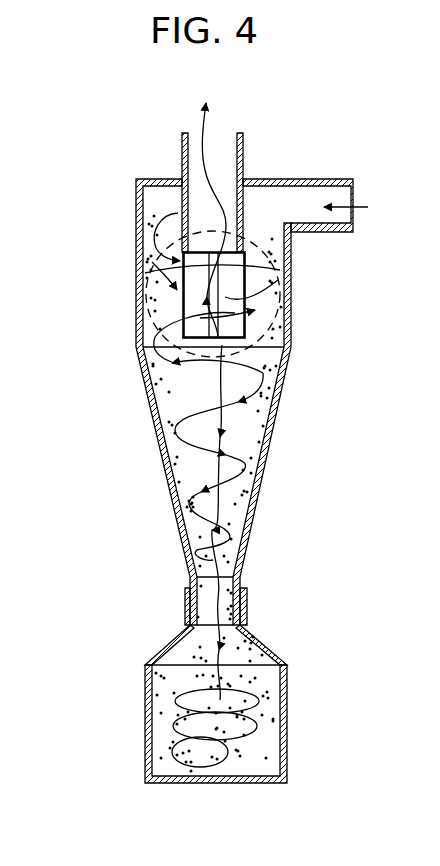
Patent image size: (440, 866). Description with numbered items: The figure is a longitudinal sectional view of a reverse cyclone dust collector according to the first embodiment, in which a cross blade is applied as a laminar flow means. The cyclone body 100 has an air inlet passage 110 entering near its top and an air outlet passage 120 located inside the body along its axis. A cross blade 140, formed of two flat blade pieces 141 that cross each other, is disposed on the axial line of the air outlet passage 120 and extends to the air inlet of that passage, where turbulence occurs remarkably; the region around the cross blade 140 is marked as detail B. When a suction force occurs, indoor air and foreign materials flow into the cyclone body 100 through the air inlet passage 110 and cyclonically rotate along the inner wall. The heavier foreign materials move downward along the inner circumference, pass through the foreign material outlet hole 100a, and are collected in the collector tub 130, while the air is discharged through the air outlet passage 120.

The cyclone body 100 is at (135, 312).
The foreign material outlet hole 100a is at (217, 601).
The air inlet passage 110 is at (308, 178).
The air outlet passage 120 is at (182, 152).
The collector tub 130 is at (287, 718).
The cross blade 140 is at (224, 273).
The flat blade pieces 141 is at (232, 275).
The detail region B is at (285, 340).